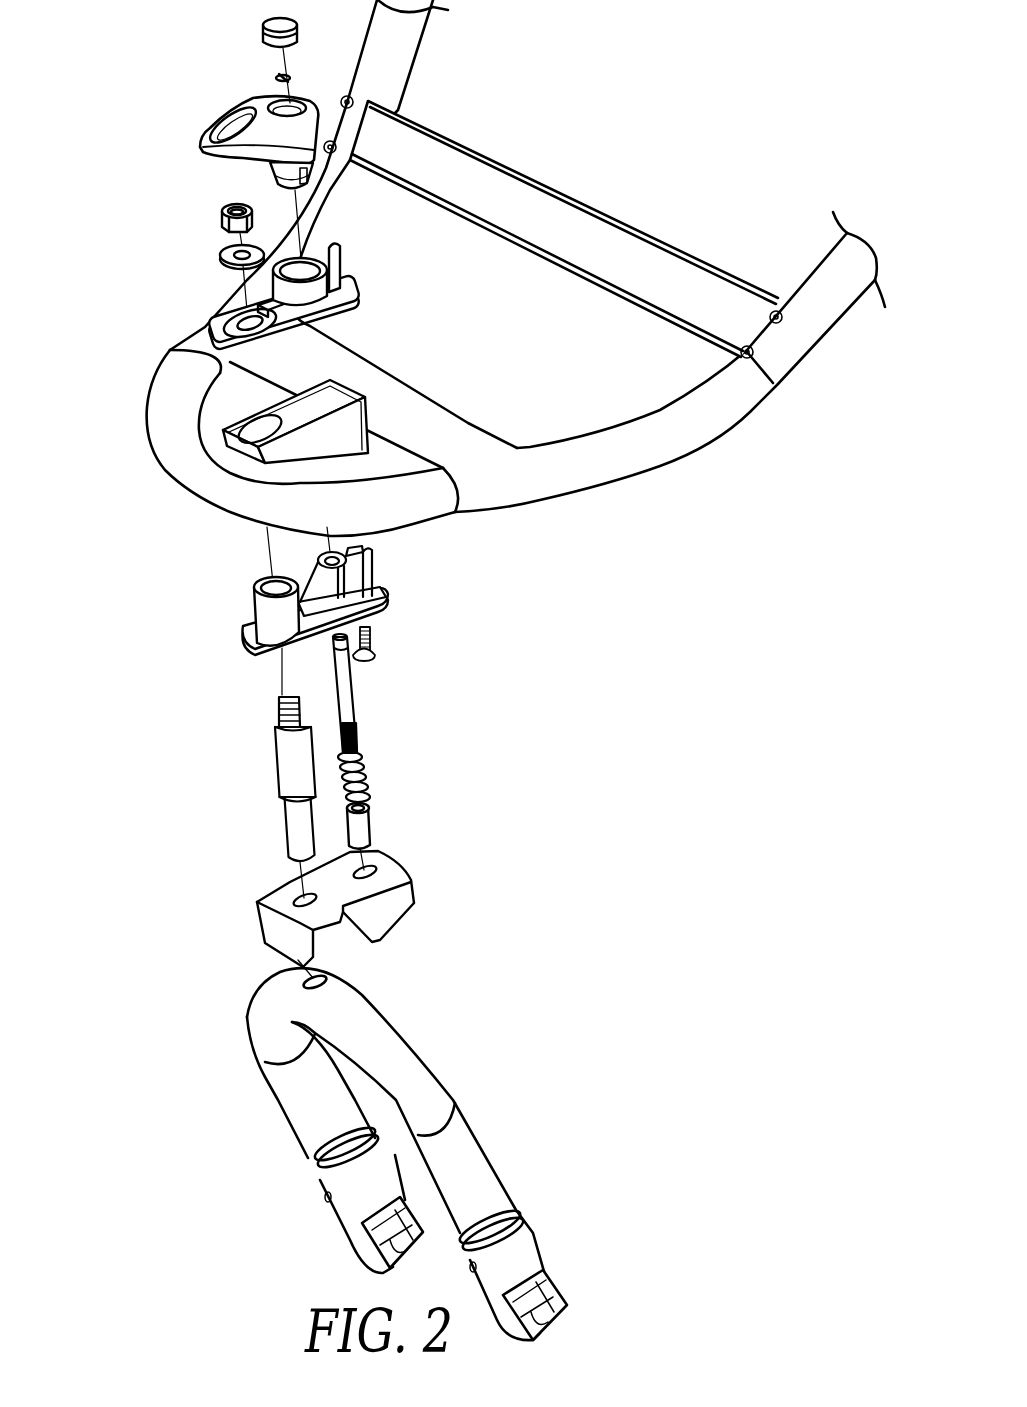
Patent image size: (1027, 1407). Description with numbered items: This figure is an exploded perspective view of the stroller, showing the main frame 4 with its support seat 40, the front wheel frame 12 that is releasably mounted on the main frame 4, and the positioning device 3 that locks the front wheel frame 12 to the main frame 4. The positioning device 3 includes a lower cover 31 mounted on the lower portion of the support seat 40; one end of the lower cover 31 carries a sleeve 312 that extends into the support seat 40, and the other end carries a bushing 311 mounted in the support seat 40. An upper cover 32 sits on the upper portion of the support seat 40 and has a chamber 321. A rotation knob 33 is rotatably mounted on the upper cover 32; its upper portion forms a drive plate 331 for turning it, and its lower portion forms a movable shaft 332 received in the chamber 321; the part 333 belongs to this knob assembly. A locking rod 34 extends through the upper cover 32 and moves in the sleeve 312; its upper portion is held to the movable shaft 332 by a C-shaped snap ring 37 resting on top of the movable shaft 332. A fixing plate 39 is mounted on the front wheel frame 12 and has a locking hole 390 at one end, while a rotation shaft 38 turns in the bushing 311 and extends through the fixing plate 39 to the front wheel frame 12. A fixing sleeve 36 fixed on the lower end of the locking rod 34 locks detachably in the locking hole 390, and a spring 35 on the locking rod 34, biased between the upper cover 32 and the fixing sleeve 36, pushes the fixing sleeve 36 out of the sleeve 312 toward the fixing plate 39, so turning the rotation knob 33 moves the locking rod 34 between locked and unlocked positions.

The positioning device 3 is at (187, 664).
The main frame 4 is at (605, 452).
The front wheel frame 12 is at (405, 1082).
The lower cover 31 is at (325, 639).
The bushing 311 is at (280, 628).
The sleeve 312 is at (337, 580).
The upper cover 32 is at (263, 270).
The chamber 321 is at (333, 250).
The rotation knob 33 is at (265, 150).
The drive plate 331 is at (200, 150).
The movable shaft 332 is at (283, 172).
The threaded shaft of handle 333 is at (310, 182).
The locking rod 34 is at (350, 690).
The spring 35 is at (365, 772).
The fixing sleeve 36 is at (360, 823).
The snap ring 37 is at (297, 73).
The rotation shaft 38 is at (290, 762).
The fixing plate 39 is at (340, 910).
The locking hole 390 is at (378, 871).
The support seat 40 is at (343, 452).